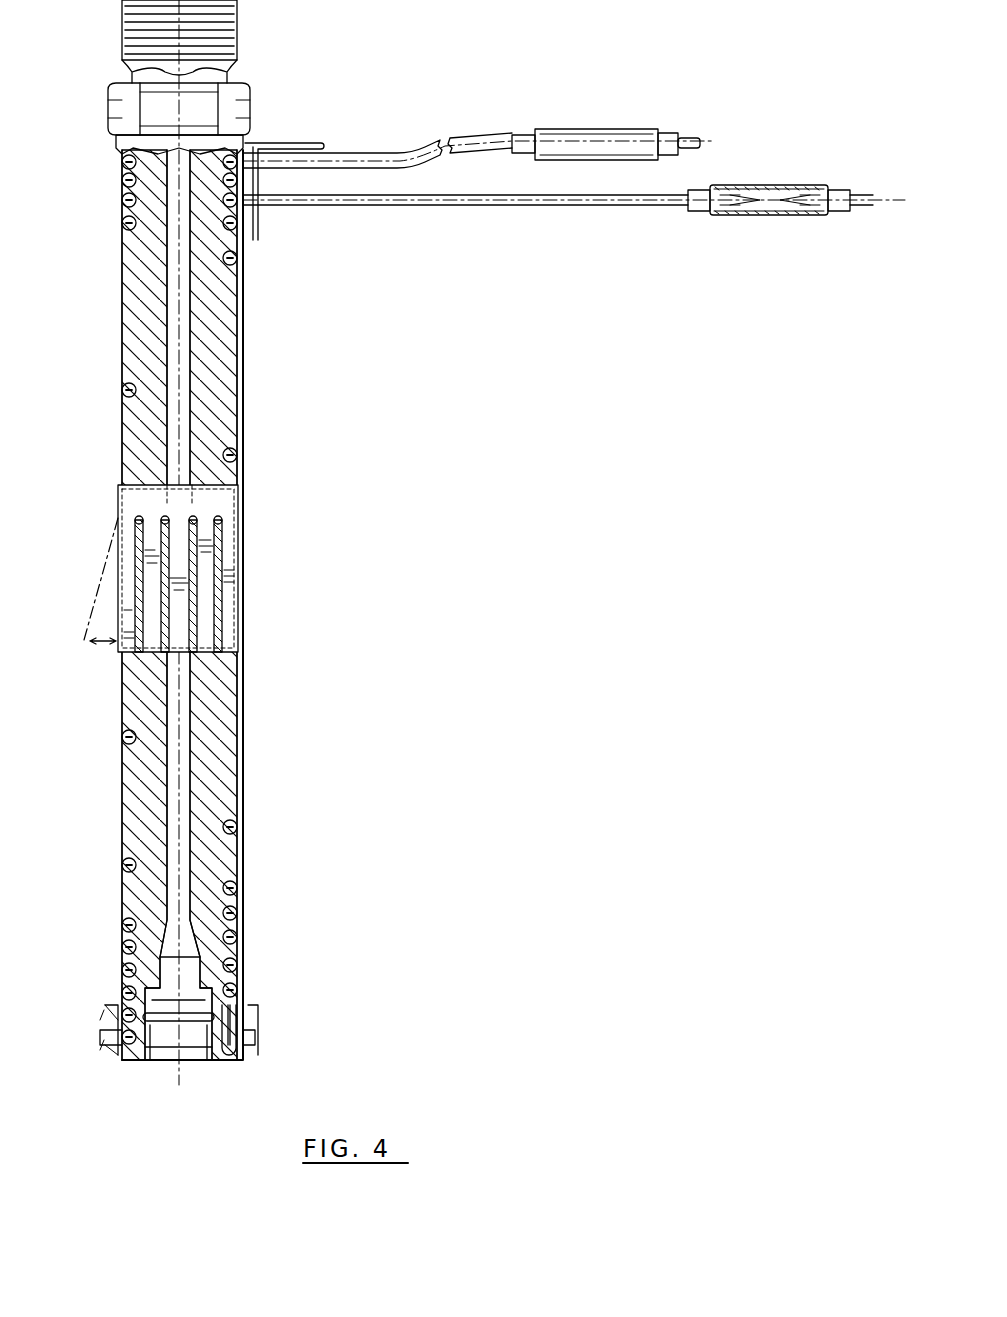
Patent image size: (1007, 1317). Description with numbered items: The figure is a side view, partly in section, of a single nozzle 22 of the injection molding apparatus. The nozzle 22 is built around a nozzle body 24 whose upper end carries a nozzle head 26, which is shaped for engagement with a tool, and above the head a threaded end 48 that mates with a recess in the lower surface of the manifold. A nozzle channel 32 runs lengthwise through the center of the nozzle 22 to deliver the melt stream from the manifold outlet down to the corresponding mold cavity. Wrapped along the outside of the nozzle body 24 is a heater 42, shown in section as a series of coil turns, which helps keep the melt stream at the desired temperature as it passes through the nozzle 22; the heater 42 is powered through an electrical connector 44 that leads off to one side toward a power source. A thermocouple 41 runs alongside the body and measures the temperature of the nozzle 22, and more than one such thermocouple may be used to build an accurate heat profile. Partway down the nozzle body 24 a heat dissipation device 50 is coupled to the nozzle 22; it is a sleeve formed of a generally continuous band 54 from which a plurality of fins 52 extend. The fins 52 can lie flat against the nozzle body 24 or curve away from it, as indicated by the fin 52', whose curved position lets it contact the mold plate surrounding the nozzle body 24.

The nozzle 22 is at (290, 748).
The nozzle body 24 is at (212, 406).
The nozzle head 26 is at (112, 120).
The nozzle channel 32 is at (172, 350).
The thermocouple 41 is at (244, 821).
The heater 42 is at (122, 221).
The electrical connector 44 is at (258, 216).
The threaded end 48 is at (128, 32).
The heat dissipation device 50 is at (183, 564).
The fins 52 is at (230, 584).
The fin in curved position 52' is at (59, 581).
The continuous band 54 is at (128, 500).